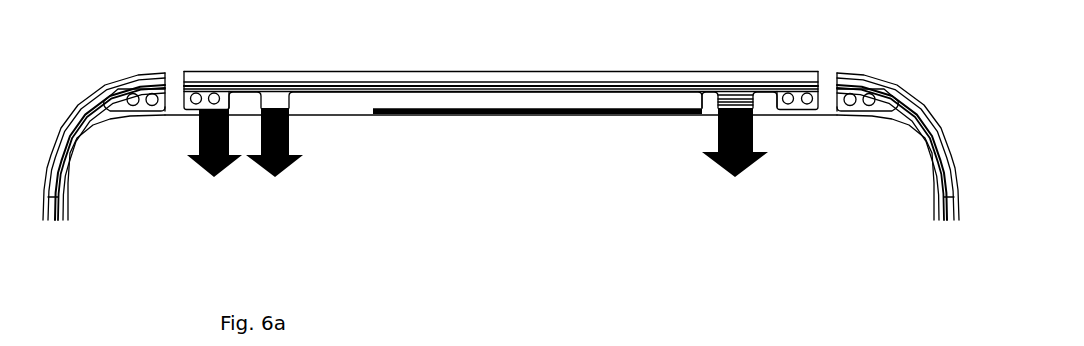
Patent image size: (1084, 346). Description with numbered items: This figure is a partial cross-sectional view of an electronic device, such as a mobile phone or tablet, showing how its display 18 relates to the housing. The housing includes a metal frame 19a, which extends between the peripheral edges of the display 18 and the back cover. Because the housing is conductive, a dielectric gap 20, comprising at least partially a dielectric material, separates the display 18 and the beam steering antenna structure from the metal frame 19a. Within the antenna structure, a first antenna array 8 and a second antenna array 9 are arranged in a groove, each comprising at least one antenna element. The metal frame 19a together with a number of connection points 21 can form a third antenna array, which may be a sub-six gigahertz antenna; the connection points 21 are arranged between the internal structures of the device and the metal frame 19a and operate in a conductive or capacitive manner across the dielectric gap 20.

The first antenna array 8 is at (466, 99).
The second antenna array 9 is at (537, 58).
The display 18 is at (484, 178).
The metal frame 19a is at (626, 68).
The dielectric gap 20 is at (326, 98).
The connection points 21 is at (189, 182).